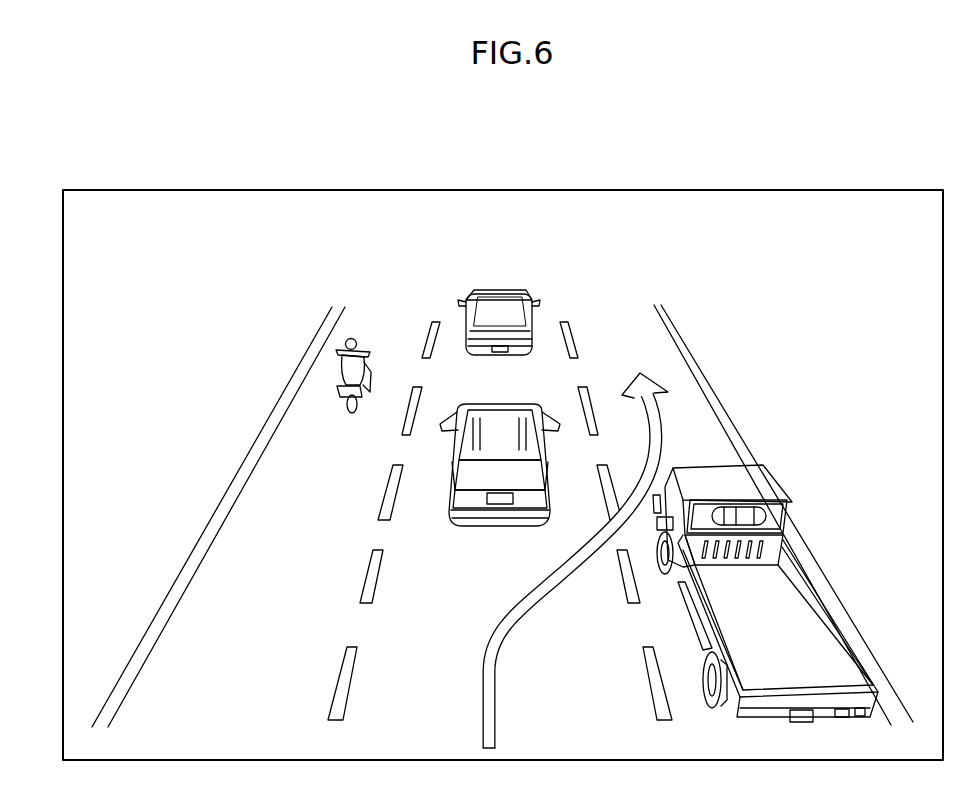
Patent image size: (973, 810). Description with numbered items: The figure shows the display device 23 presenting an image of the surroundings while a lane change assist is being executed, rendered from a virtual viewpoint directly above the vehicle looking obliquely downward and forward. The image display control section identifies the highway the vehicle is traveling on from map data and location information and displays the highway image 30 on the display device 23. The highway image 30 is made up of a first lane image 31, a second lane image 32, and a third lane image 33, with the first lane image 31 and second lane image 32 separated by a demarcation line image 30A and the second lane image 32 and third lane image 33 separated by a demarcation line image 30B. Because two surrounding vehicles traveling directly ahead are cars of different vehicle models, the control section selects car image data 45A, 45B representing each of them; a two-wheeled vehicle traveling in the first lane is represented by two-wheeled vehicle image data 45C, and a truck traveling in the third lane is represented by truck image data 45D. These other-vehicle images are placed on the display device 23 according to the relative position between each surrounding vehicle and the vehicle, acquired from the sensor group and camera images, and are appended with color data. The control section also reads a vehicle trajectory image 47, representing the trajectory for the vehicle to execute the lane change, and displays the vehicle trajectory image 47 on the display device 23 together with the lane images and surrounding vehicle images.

The display device 23 is at (753, 190).
The highway image 30 is at (746, 307).
The first lane image 31 is at (378, 322).
The second lane image 32 is at (473, 483).
The third lane image 33 is at (700, 420).
The demarcation line image 30A is at (366, 572).
The demarcation line image 30B is at (645, 672).
The car image data 45A is at (490, 530).
The car image data 45B is at (513, 356).
The two-wheeled vehicle image data 45C is at (350, 410).
The truck image data 45D is at (776, 722).
The vehicle trajectory image 47 is at (484, 672).